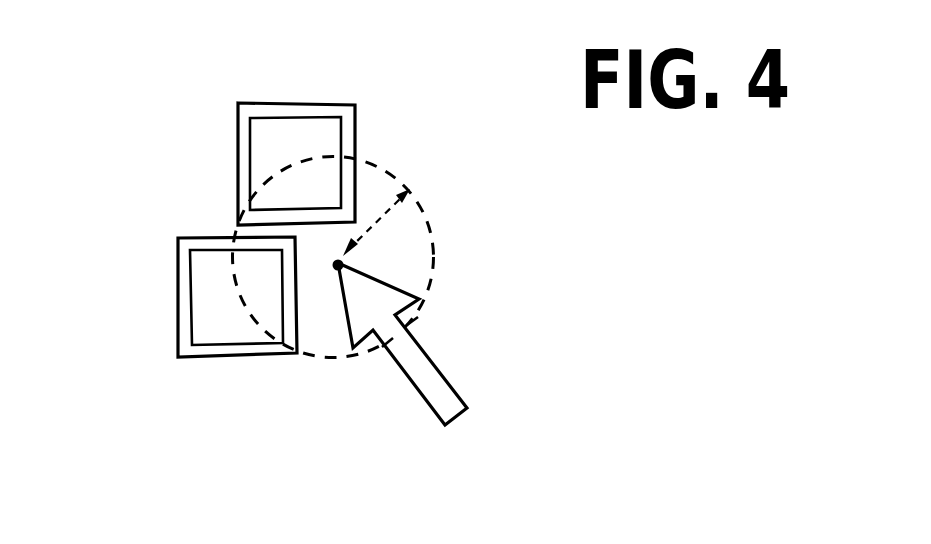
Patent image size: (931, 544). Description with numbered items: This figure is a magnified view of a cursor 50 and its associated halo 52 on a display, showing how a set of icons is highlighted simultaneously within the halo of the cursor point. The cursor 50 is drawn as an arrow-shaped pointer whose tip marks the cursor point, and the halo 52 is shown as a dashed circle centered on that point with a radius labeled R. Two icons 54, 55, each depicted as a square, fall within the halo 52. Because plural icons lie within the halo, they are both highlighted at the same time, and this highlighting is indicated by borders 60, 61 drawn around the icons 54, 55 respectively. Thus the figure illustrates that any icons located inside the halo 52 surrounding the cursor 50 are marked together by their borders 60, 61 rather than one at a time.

The cursor 50 is at (441, 369).
The halo 52 is at (400, 253).
The icon 54 is at (298, 137).
The icon 55 is at (210, 322).
The border 60 is at (243, 157).
The border 61 is at (187, 292).